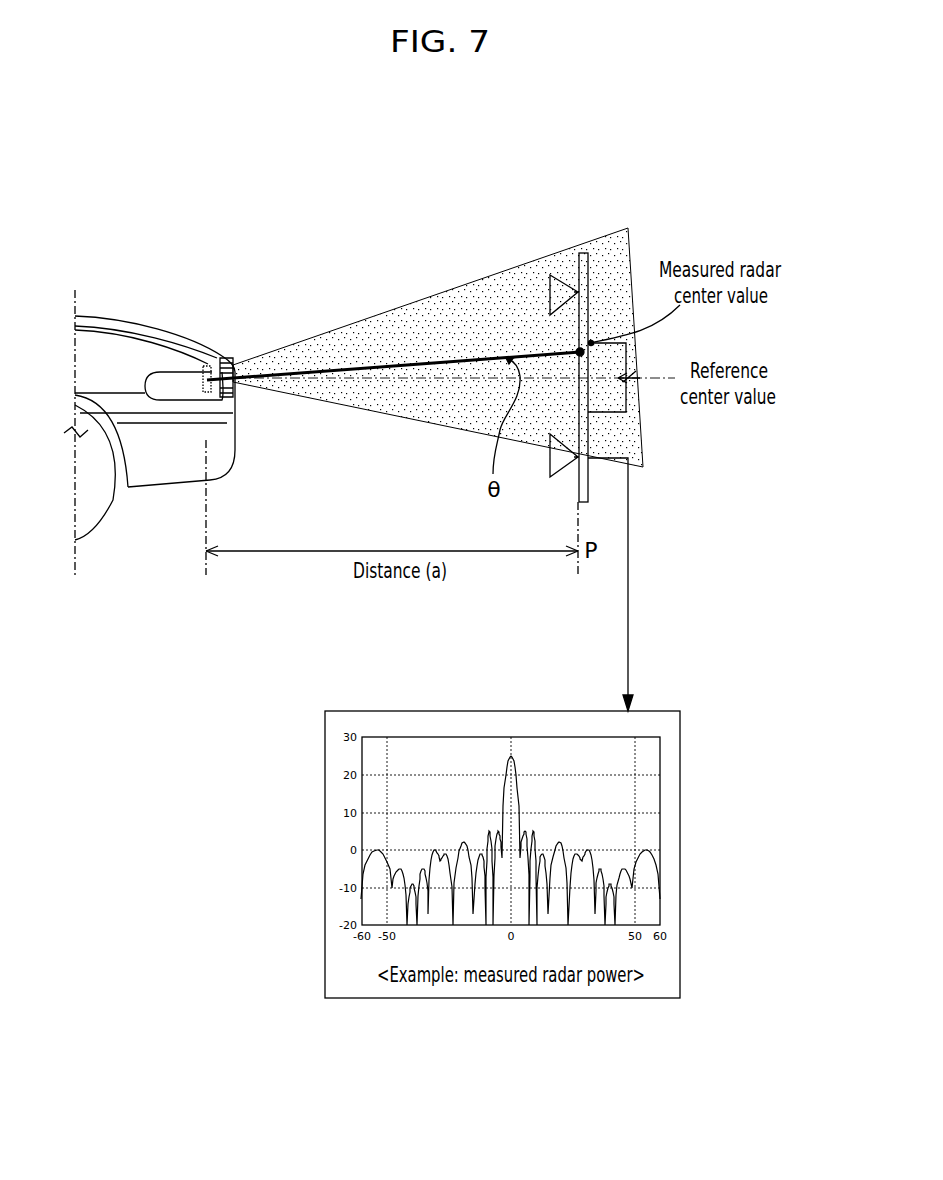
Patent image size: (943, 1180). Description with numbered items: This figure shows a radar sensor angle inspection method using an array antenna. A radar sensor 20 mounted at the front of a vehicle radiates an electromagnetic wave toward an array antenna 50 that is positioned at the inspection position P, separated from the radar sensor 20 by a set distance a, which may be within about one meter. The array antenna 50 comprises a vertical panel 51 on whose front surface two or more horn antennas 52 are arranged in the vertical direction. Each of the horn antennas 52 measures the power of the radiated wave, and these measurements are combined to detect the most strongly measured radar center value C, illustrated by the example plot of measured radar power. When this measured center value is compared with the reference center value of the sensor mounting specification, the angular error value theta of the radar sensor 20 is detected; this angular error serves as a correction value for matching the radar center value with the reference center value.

The radar sensor 20 is at (207, 364).
The array antenna 50 is at (561, 330).
The vertical panel 51 is at (580, 255).
The horn antennas 52 is at (550, 278).